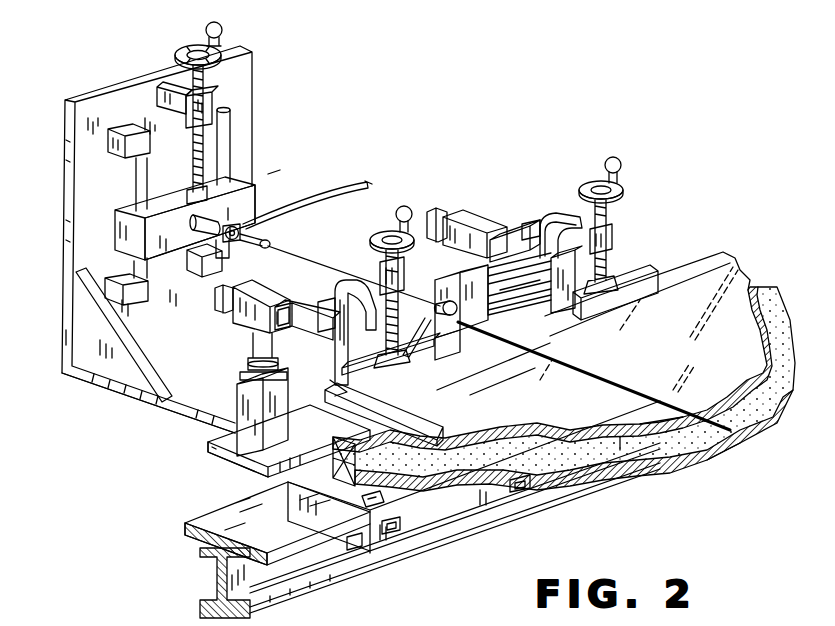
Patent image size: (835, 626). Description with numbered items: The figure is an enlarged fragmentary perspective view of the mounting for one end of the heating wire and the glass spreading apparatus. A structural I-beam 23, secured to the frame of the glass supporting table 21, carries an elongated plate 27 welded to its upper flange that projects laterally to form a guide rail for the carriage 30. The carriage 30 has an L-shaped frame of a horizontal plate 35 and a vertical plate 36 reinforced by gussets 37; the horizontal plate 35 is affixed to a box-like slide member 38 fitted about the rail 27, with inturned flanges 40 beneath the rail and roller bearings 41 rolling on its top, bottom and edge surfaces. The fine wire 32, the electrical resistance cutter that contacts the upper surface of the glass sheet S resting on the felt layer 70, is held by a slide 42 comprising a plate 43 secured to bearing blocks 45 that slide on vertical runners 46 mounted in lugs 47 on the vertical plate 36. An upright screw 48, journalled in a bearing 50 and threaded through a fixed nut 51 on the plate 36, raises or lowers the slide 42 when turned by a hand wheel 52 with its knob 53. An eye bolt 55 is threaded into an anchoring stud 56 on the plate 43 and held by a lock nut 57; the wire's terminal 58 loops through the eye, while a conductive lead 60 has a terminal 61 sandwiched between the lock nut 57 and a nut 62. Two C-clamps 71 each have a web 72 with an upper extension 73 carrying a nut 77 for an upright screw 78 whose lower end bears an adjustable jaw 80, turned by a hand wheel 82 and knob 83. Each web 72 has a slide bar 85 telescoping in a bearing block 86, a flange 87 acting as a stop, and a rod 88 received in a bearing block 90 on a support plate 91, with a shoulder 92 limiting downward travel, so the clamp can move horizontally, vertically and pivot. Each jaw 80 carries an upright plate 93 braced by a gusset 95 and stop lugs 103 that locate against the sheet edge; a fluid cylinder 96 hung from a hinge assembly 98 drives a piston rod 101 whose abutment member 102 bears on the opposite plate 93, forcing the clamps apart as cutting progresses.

The glass supporting table 21 is at (704, 472).
The structural I-beam 23 is at (218, 568).
The elongated plate 27 is at (212, 510).
The carriage 30 is at (163, 436).
The fine wire 32 is at (660, 392).
The horizontal plate 35 is at (170, 404).
The vertical plate 36 is at (110, 105).
The gusset 37 is at (80, 292).
The slide member 38 is at (477, 525).
The inturned flange 40 is at (352, 550).
The roller bearing 41 is at (401, 525).
The slide 42 is at (270, 172).
The plate 43 is at (148, 243).
The bearing block 45 is at (246, 176).
The runner 46 is at (134, 266).
The lug 47 is at (104, 143).
The upright screw 48 is at (190, 97).
The bearing 50 is at (190, 192).
The fixed nut 51 is at (206, 92).
The hand wheel 52 is at (186, 47).
The knob 53 is at (222, 29).
The eye bolt 55 is at (266, 240).
The anchoring stud 56 is at (185, 218).
The lock nut 57 is at (200, 231).
The terminal 58 is at (270, 246).
The conductive lead 60 is at (339, 180).
The terminal 61 is at (233, 222).
The nut 62 is at (222, 268).
The layer 70 is at (774, 440).
The C-clamp 71 is at (336, 280).
The web 72 is at (330, 306).
The upper horizontal extension 73 is at (357, 280).
The nut 77 is at (385, 318).
The upright screw 78 is at (401, 278).
The adjustable jaw member 80 is at (350, 394).
The hand wheel 82 is at (378, 241).
The knob 83 is at (403, 214).
The slide bar 85 is at (291, 334).
The bearing block 86 is at (243, 312).
The flange 87 is at (216, 302).
The rod 88 is at (258, 348).
The bearing block 90 is at (243, 450).
The support plate 91 is at (210, 445).
The shoulder 92 is at (237, 386).
The upright plate 93 is at (458, 350).
The gusset 95 is at (420, 354).
The fluid actuating cylinder 96 is at (528, 306).
The pivotal hinge assembly 98 is at (531, 222).
The piston rod 101 is at (455, 322).
The abutment member 102 is at (450, 282).
The stop lug 103 is at (340, 364).
The glass blank or sheet S is at (710, 266).